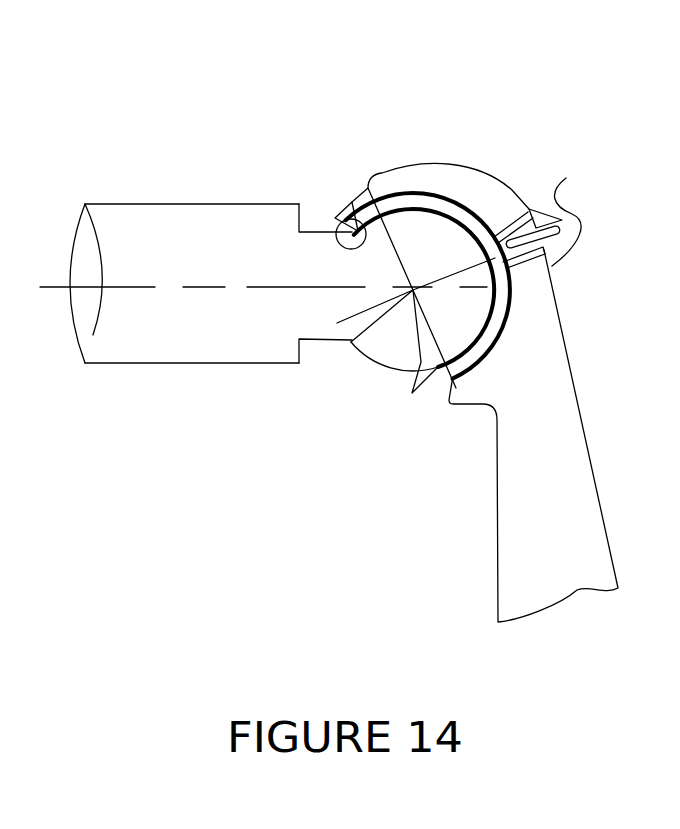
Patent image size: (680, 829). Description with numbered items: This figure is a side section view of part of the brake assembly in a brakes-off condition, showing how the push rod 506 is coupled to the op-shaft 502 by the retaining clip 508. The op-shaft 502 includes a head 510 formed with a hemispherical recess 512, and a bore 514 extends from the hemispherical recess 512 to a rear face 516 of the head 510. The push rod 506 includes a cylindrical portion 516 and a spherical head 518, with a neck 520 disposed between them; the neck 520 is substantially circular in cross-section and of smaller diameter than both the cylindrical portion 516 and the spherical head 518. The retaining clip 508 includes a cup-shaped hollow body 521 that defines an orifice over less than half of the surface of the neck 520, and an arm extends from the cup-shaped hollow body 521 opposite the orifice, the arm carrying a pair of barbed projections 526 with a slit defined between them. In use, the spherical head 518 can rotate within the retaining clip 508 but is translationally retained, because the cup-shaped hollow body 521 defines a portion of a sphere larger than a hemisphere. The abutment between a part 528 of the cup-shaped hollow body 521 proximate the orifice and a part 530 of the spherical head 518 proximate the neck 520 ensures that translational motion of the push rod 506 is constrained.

The op-shaft 502 is at (590, 447).
The push rod 506 is at (173, 357).
The retaining clip 508 is at (467, 382).
The head 510 is at (549, 379).
The hemispherical recess 512 is at (470, 203).
The bore 514 is at (546, 262).
The cylindrical portion 516 is at (192, 256).
The spherical head 518 is at (393, 354).
The neck 520 is at (323, 343).
The cup-shaped hollow body 521 is at (428, 207).
The barbed projections 526 is at (532, 212).
The part of the cup-shaped hollow body 528 is at (350, 217).
The part of the spherical head 530 is at (337, 236).